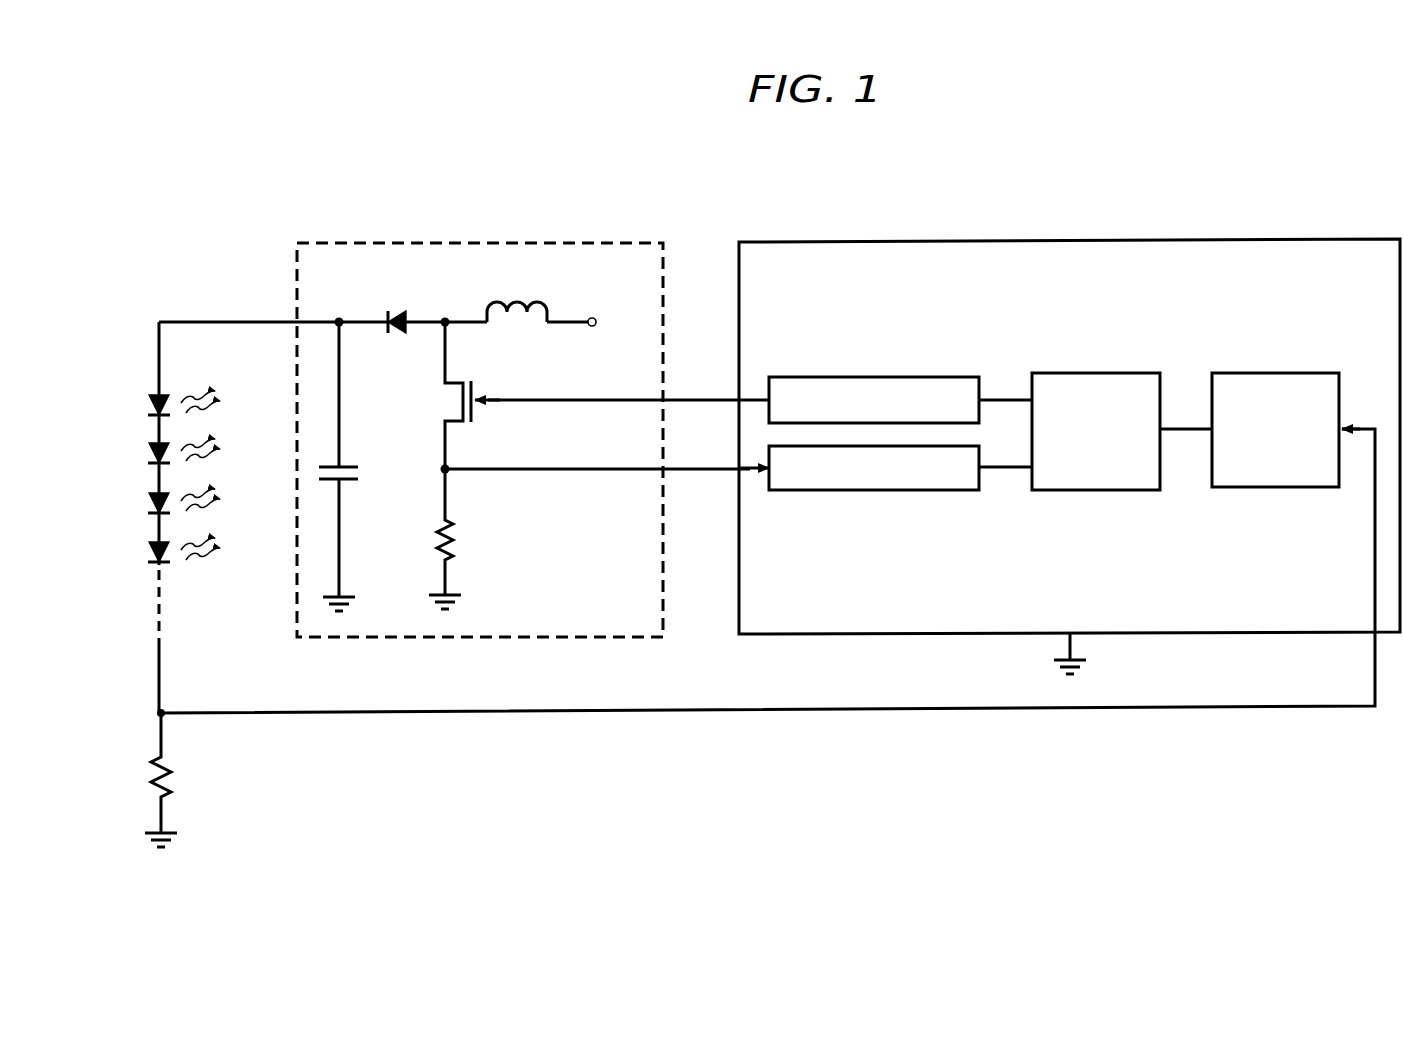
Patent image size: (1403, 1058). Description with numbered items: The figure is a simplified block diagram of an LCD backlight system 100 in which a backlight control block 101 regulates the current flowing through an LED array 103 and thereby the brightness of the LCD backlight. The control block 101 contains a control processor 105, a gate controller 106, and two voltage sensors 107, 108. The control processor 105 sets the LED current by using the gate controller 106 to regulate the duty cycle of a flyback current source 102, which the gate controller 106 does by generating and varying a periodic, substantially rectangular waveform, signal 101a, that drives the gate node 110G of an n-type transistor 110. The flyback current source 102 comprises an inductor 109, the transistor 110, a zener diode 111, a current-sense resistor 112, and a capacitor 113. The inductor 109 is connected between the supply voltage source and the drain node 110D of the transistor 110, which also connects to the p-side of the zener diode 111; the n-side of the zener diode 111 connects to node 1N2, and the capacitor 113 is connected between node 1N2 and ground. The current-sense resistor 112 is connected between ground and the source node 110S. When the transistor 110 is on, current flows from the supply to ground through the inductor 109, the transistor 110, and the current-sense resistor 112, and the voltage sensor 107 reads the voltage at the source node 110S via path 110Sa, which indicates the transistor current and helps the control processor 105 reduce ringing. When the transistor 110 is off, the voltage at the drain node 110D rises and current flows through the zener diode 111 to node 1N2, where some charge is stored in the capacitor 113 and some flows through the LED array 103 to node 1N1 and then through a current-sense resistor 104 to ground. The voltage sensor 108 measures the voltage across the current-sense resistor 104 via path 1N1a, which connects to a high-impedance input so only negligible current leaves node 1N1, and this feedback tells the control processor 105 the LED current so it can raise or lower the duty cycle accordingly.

The LCD backlight system 100 is at (835, 151).
The backlight control block 101 is at (1320, 240).
The signal 101a is at (704, 397).
The flyback current source 102 is at (574, 241).
The LED array 103 is at (138, 385).
The current-sense resistor 104 is at (165, 773).
The control processor 105 is at (1088, 373).
The gate controller 106 is at (905, 376).
The voltage sensor 107 is at (905, 491).
The voltage sensor 108 is at (1270, 373).
The inductor 109 is at (547, 300).
The n-type transistor 110 is at (460, 418).
The drain node 110D is at (446, 318).
The gate node 110G is at (499, 394).
The source node 110S is at (449, 473).
The path 110Sa is at (703, 474).
The zener diode 111 is at (388, 327).
The current-sense resistor 112 is at (438, 559).
The capacitor 113 is at (348, 481).
The node 1N1 is at (184, 702).
The path 1N1a is at (470, 712).
The node 1N2 is at (401, 315).